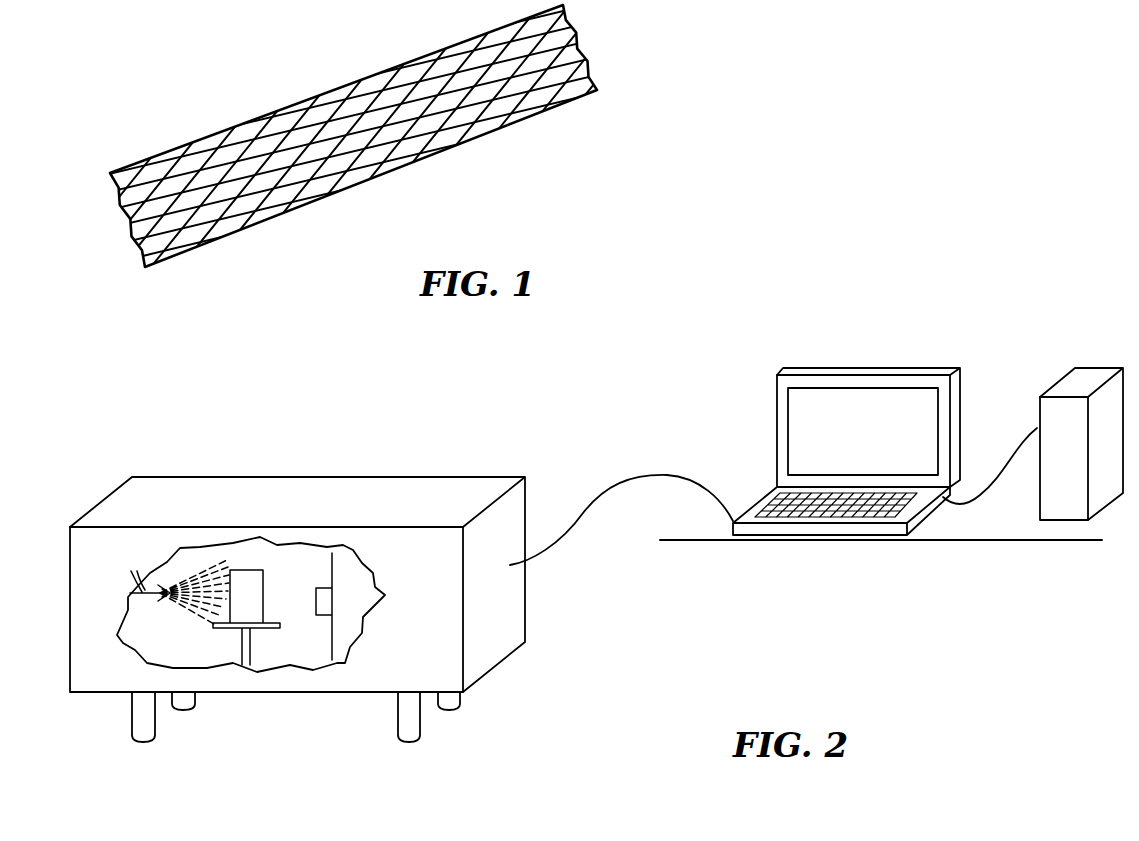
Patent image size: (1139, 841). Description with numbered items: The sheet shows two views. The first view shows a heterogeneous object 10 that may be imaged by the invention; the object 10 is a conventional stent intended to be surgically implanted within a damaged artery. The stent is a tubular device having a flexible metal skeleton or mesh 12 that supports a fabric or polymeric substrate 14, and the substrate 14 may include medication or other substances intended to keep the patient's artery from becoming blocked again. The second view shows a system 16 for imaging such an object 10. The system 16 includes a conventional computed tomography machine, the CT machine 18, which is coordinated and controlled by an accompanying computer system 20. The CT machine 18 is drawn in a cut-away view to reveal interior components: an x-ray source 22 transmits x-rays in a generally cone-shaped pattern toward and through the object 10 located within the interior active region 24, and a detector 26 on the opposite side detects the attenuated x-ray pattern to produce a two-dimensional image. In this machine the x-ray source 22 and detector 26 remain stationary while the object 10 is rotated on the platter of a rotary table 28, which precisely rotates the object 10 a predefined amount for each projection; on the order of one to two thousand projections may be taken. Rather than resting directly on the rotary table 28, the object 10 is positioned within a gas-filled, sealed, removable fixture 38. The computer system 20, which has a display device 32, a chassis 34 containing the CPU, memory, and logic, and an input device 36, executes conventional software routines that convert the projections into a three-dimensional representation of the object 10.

In FIG. 1, the heterogeneous object 10 is at (211, 54).
In FIG. 1, the mesh 12 is at (370, 102).
In FIG. 1, the substrate 14 is at (508, 108).
In FIG. 2, the system 16 is at (792, 652).
In FIG. 2, the CT machine 18 is at (375, 497).
In FIG. 2, the computer system 20 is at (910, 568).
In FIG. 2, the x-ray source 22 is at (133, 575).
In FIG. 2, the active region 24 is at (302, 576).
In FIG. 2, the detector 26 is at (341, 614).
In FIG. 2, the rotary table 28 is at (206, 639).
In FIG. 2, the display device 32 is at (837, 426).
In FIG. 2, the chassis 34 is at (1079, 438).
In FIG. 2, the input device 36 is at (757, 500).
In FIG. 2, the fixture 38 is at (259, 611).